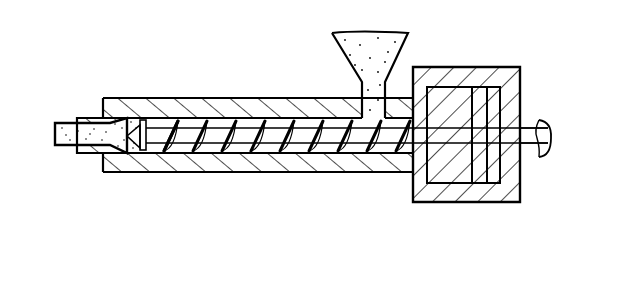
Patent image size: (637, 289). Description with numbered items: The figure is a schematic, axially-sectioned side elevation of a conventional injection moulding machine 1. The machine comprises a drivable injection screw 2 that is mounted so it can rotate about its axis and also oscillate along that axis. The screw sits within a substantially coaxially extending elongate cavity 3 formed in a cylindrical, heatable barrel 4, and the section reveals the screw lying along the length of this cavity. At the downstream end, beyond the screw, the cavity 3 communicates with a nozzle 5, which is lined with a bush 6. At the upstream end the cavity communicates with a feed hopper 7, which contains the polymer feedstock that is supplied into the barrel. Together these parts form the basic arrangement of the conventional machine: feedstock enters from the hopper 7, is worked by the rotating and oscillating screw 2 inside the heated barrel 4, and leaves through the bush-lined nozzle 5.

The injection moulding machine 1 is at (187, 80).
The injection screw 2 is at (302, 126).
The elongate cavity 3 is at (240, 121).
The barrel 4 is at (179, 161).
The nozzle 5 is at (87, 118).
The bush 6 is at (60, 124).
The feed hopper 7 is at (404, 48).